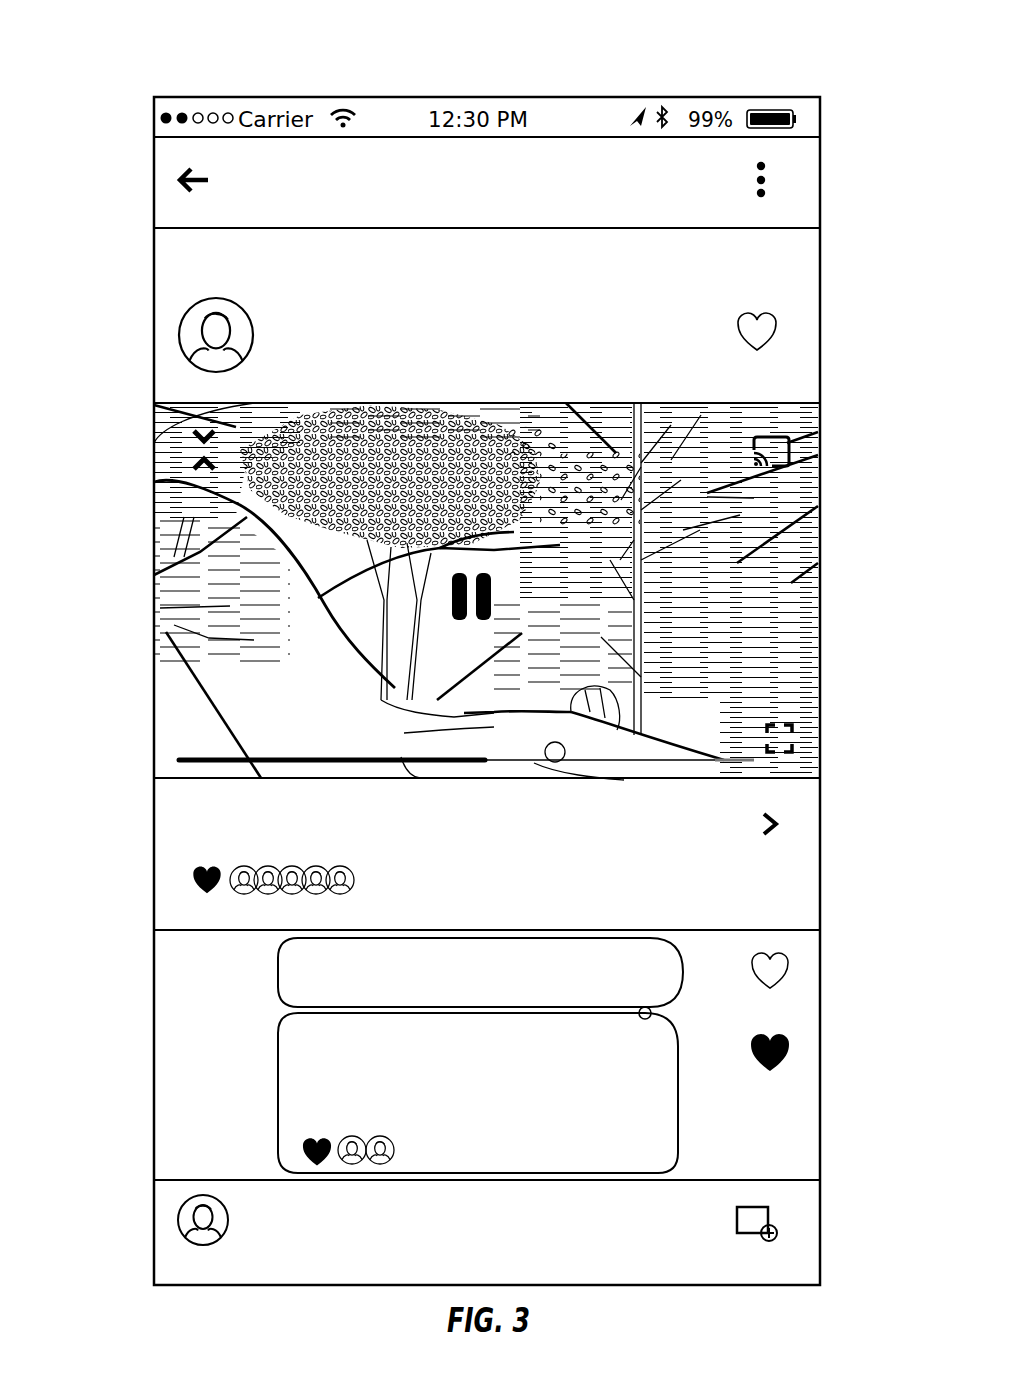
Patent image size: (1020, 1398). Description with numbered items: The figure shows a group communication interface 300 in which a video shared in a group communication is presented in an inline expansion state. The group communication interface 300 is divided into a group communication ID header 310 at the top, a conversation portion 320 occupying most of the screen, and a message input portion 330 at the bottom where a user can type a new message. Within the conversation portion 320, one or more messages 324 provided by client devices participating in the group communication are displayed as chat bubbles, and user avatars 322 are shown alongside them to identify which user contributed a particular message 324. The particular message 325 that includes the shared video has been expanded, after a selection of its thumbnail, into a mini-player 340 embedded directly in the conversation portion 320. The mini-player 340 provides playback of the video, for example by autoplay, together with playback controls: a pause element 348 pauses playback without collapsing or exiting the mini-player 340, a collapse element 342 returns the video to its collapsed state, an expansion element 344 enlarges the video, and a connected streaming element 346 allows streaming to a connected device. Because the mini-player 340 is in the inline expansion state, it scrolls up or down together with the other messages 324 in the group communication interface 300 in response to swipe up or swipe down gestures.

The group communication interface 300 is at (802, 46).
The group communication ID header 310 is at (153, 137).
The conversation portion 320 is at (153, 232).
The user avatars 322 is at (183, 322).
The messages 324 is at (678, 1073).
The message including the shared video 325 is at (790, 870).
The message input portion 330 is at (153, 1180).
The mini-player 340 is at (795, 583).
The collapse element 342 is at (195, 435).
The expansion element 344 is at (795, 730).
The connected streaming element 346 is at (795, 441).
The pause element 348 is at (240, 478).